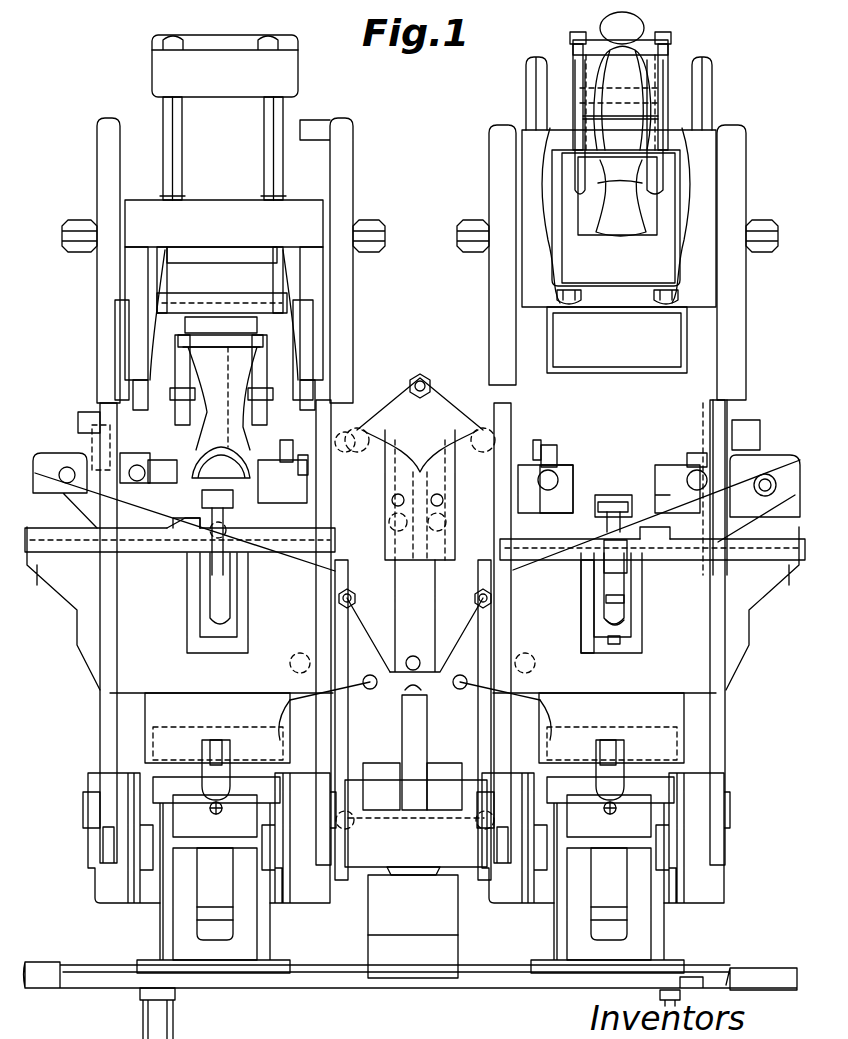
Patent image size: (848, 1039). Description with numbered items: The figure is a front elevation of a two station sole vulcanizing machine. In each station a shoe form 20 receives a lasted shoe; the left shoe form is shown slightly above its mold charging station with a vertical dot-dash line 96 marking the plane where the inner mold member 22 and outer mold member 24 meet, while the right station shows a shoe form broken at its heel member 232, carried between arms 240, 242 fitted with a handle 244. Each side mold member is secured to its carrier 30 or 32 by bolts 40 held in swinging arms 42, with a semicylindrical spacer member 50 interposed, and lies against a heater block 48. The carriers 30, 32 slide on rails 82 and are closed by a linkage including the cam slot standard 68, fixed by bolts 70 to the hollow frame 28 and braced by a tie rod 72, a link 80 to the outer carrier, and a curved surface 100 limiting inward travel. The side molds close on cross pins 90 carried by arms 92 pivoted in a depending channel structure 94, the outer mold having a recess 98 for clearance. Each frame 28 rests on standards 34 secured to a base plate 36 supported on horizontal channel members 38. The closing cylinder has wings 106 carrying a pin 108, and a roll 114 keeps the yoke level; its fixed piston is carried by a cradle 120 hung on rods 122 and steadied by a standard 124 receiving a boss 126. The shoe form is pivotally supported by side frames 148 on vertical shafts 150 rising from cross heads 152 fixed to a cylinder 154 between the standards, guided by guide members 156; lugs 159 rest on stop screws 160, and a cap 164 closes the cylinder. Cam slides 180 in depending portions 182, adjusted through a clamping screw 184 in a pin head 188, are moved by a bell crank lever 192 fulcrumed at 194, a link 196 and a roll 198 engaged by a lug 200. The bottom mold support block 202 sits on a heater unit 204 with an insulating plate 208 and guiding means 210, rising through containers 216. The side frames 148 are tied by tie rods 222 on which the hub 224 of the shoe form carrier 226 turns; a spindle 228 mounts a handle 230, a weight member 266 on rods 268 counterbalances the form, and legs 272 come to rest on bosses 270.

The shoe form 20 is at (212, 406).
The inner mold member 22 is at (236, 502).
The outer mold member 24 is at (188, 515).
The hollow frame 28 is at (102, 652).
The carrier 30 is at (312, 524).
The carrier 32 is at (52, 541).
The standards 34 is at (161, 942).
The base plate 36 is at (345, 982).
The horizontal channel members 38 is at (174, 1027).
The bolts 40 is at (135, 453).
The swinging arm 42 is at (92, 436).
The heater block 48 is at (97, 445).
The semicylindrical spacer member 50 is at (141, 465).
The standard 68 is at (418, 376).
The bolts 70 is at (335, 600).
The tie rod 72 is at (431, 383).
The link 80 is at (582, 572).
The rails 82 is at (168, 542).
The cross pins 90 is at (229, 454).
The arm 92 is at (200, 556).
The depending channel structure 94 is at (192, 602).
The line 96 is at (188, 400).
The recess 98 is at (181, 498).
The curved surface 100 is at (362, 426).
The wings 106 is at (400, 807).
The pin 108 is at (480, 601).
The roll 114 is at (352, 601).
The cradle 120 is at (440, 882).
The rods 122 is at (400, 766).
The standard 124 is at (448, 937).
The cylindrical boss 126 is at (420, 877).
The side frames 148 is at (100, 128).
The vertical shafts 150 is at (335, 622).
The composite cross head 152 is at (102, 896).
The cylinder 154 is at (240, 922).
The guide members 156 is at (282, 456).
The lugs 159 is at (210, 802).
The stop screws 160 is at (222, 806).
The cap 164 is at (200, 930).
The cam slides 180 is at (655, 752).
The depending portions 182 is at (650, 746).
The clamping screw 184 is at (604, 740).
The head 188 is at (620, 746).
The bell crank lever 192 is at (545, 684).
The fulcrum 194 is at (540, 658).
The link 196 is at (536, 706).
The roll 198 is at (414, 671).
The lug 200 is at (445, 777).
The support block 202 is at (628, 562).
The heater unit 204 is at (624, 600).
The insulating plate 208 is at (620, 624).
The guiding means 210 is at (612, 642).
The containers 216 is at (596, 496).
The tie rods 222 is at (384, 242).
The hub 224 is at (243, 206).
The shoe form carrier 226 is at (284, 327).
The spindle 228 is at (243, 256).
The handle 230 is at (240, 302).
The heel member 232 is at (645, 48).
The arm 240 is at (576, 48).
The arm 242 is at (668, 72).
The handle 244 is at (616, 44).
The weight member 266 is at (298, 90).
The rods 268 is at (264, 136).
The bosses 270 is at (85, 412).
The legs 272 is at (305, 332).